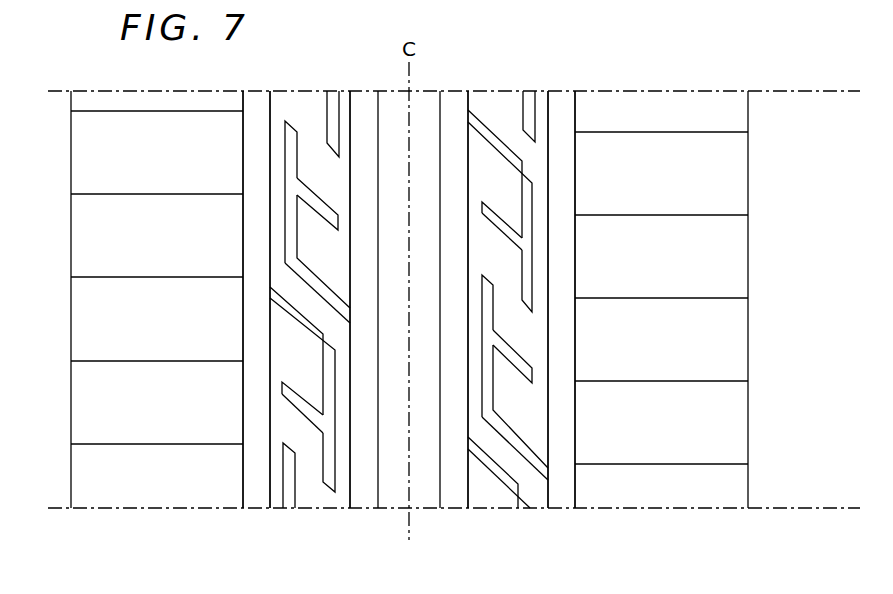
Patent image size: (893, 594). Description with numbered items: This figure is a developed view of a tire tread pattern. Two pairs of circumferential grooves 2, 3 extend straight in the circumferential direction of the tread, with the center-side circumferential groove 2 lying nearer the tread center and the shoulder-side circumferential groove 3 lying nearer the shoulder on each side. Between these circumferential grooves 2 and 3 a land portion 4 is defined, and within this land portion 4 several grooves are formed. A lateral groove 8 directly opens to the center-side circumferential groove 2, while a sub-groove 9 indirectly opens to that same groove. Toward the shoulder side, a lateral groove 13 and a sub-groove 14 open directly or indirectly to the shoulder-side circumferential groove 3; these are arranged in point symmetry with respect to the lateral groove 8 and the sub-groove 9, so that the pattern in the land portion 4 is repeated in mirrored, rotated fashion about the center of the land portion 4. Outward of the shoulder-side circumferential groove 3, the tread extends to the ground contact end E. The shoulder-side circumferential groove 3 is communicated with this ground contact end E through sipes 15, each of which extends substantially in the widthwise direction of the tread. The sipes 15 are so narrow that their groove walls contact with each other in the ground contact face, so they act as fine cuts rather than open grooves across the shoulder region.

The center-side circumferential groove 2 is at (362, 510).
The shoulder-side circumferential groove 3 is at (250, 510).
The land portion 4 is at (310, 490).
The lateral groove 8 is at (315, 282).
The sub-groove 9 is at (318, 204).
The lateral groove 13 is at (299, 314).
The sub-groove 14 is at (298, 403).
The sipe 15 is at (150, 360).
The ground contact end E is at (70, 330).